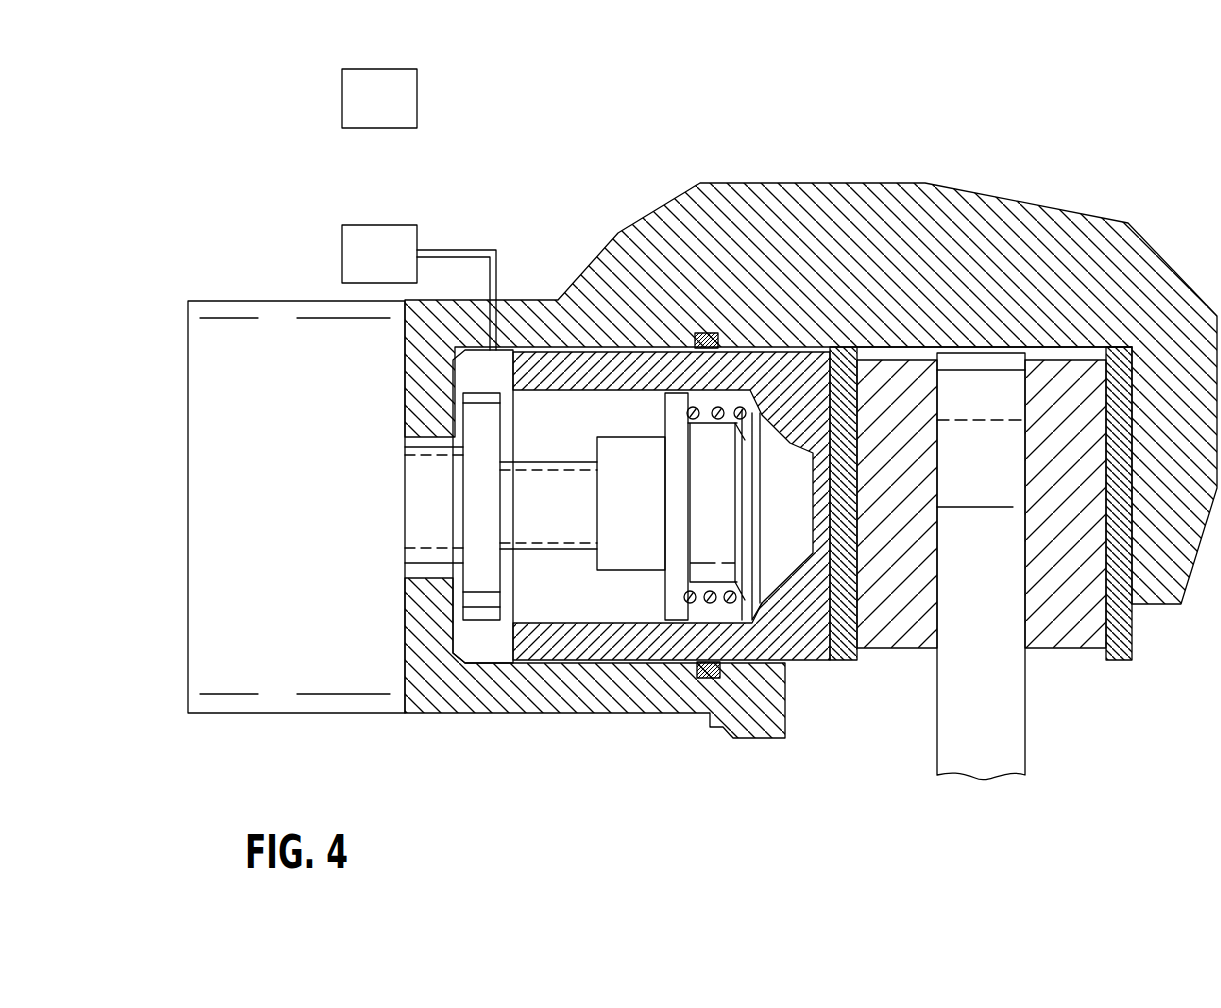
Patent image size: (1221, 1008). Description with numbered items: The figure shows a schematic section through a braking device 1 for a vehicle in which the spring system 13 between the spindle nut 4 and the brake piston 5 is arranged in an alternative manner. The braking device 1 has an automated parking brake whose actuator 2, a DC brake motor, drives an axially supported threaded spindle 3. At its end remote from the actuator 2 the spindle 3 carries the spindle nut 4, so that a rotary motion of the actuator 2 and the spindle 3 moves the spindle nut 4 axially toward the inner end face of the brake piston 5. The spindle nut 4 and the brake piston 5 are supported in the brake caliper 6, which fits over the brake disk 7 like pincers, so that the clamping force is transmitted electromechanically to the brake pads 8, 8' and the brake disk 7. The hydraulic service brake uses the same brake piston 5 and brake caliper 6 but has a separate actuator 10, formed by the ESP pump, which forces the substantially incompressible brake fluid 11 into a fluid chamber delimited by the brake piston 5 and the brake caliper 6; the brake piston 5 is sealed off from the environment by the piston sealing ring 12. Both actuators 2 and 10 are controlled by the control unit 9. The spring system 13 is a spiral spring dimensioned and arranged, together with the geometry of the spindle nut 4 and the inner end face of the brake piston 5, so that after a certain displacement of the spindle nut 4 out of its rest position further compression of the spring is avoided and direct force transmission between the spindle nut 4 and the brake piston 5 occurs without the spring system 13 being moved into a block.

The braking device 1 is at (1113, 166).
The actuator 2 is at (212, 292).
The spindle 3 is at (558, 525).
The spindle nut 4 is at (626, 528).
The brake piston 5 is at (664, 645).
The brake caliper 6 is at (867, 215).
The brake disk 7 is at (978, 748).
The brake pad 8 is at (883, 544).
The brake pad 8' is at (1078, 544).
The control unit 9 is at (360, 96).
The actuator 10 is at (360, 253).
The brake fluid 11 is at (486, 650).
The piston sealing ring 12 is at (710, 680).
The spring system 13 is at (730, 605).